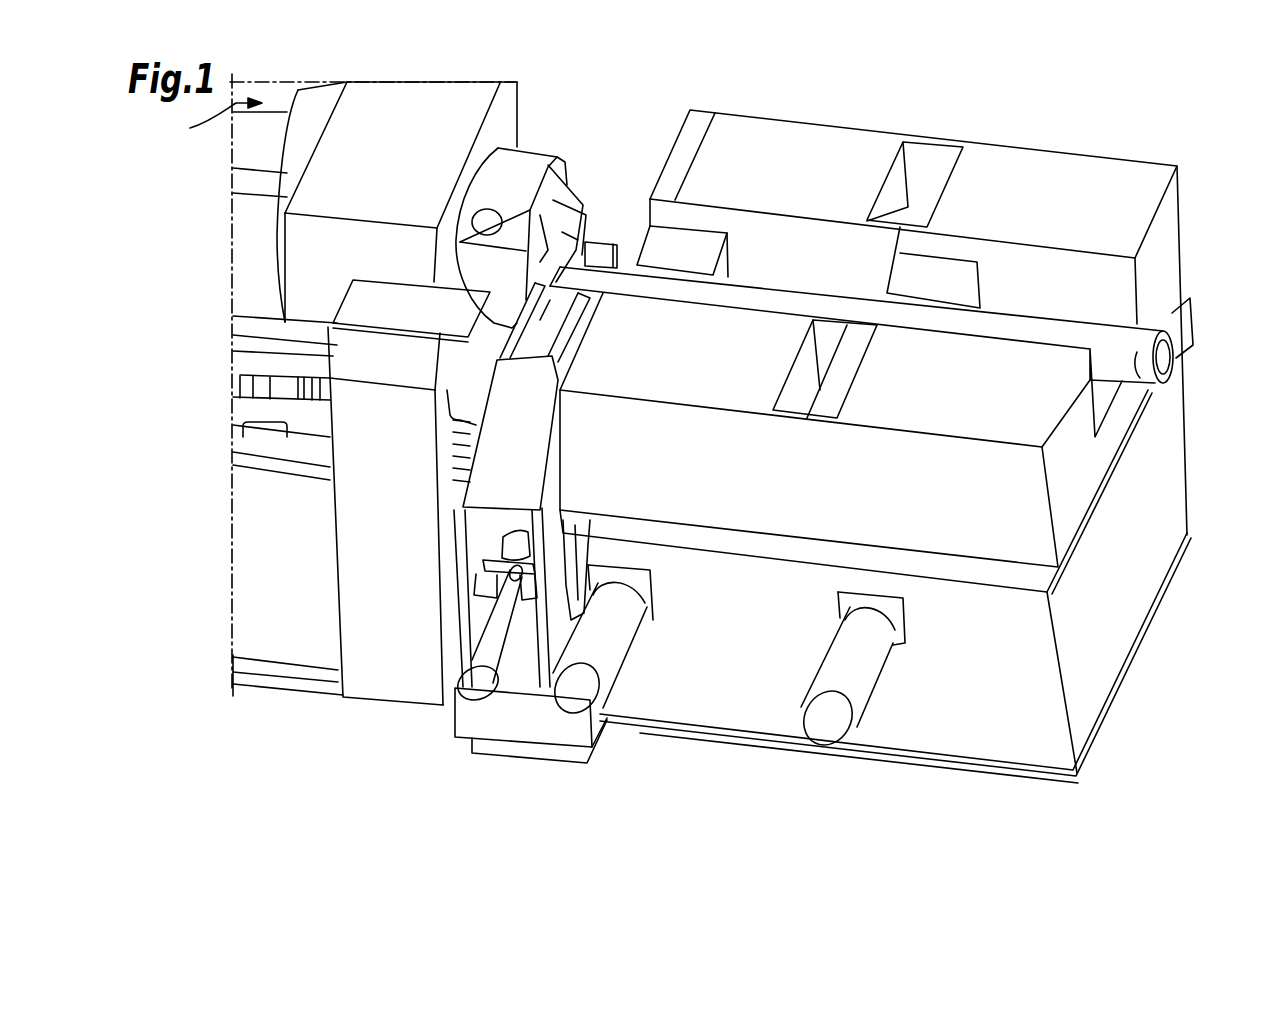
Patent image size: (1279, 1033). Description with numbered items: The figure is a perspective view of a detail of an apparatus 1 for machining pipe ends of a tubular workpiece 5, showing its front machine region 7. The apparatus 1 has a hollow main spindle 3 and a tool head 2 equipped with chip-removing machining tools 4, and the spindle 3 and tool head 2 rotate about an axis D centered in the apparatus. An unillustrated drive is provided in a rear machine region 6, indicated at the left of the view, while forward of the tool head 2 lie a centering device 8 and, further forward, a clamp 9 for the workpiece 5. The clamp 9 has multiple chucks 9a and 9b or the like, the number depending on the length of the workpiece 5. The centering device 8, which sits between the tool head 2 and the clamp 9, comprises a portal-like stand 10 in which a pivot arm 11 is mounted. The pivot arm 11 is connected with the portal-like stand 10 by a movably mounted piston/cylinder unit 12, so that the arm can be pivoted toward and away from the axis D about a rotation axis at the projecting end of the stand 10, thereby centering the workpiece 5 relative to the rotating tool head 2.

The apparatus 1 is at (1172, 130).
The tool head 2 is at (505, 183).
The hollow main spindle 3 is at (253, 270).
The chip-removing machining tools 4 is at (560, 217).
The workpiece 5 is at (1145, 390).
The rear machine region 6 is at (218, 118).
The front machine region 7 is at (531, 124).
The centering device 8 is at (538, 368).
The clamp 9 is at (653, 692).
The chuck 9a is at (703, 240).
The chuck 9b is at (958, 268).
The portal-like stand 10 is at (527, 668).
The pivot arm 11 is at (574, 311).
The piston/cylinder unit 12 is at (462, 702).
The axis D is at (278, 244).